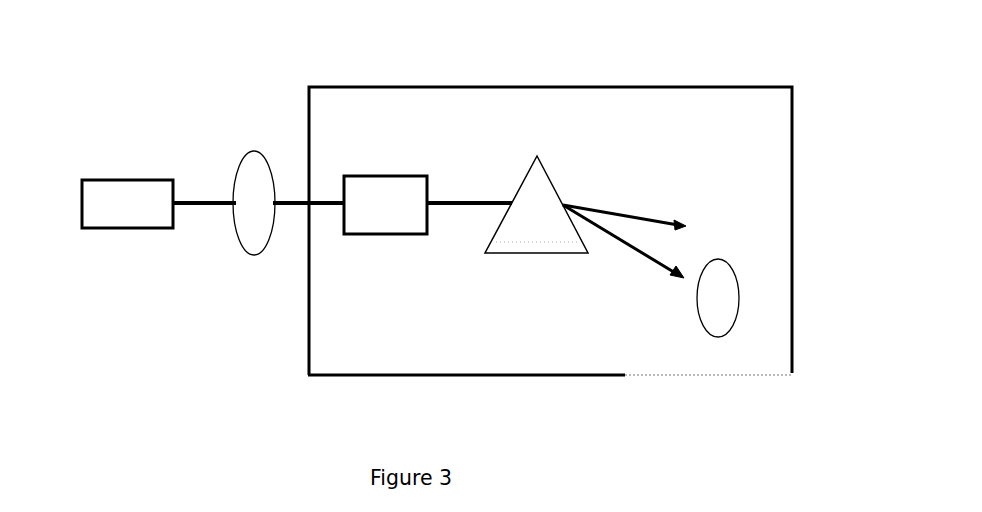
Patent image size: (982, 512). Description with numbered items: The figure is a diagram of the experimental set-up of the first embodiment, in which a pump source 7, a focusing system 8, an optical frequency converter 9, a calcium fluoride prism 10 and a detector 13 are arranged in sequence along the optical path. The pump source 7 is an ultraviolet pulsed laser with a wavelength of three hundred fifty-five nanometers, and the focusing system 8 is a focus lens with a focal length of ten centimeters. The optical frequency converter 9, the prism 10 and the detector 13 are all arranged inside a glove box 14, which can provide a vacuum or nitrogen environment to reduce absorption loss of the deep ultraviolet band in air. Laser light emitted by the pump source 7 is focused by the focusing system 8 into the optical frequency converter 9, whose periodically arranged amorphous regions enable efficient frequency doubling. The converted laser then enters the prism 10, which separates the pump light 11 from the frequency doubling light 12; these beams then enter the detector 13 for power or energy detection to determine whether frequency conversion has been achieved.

The pump source 7 is at (103, 138).
The focusing system 8 is at (218, 152).
The optical frequency converter 9 is at (342, 131).
The calcium fluoride prism 10 is at (494, 141).
The pump light 11 is at (653, 128).
The frequency doubling light 12 is at (615, 312).
The detector 13 is at (767, 246).
The glove box 14 is at (550, 253).